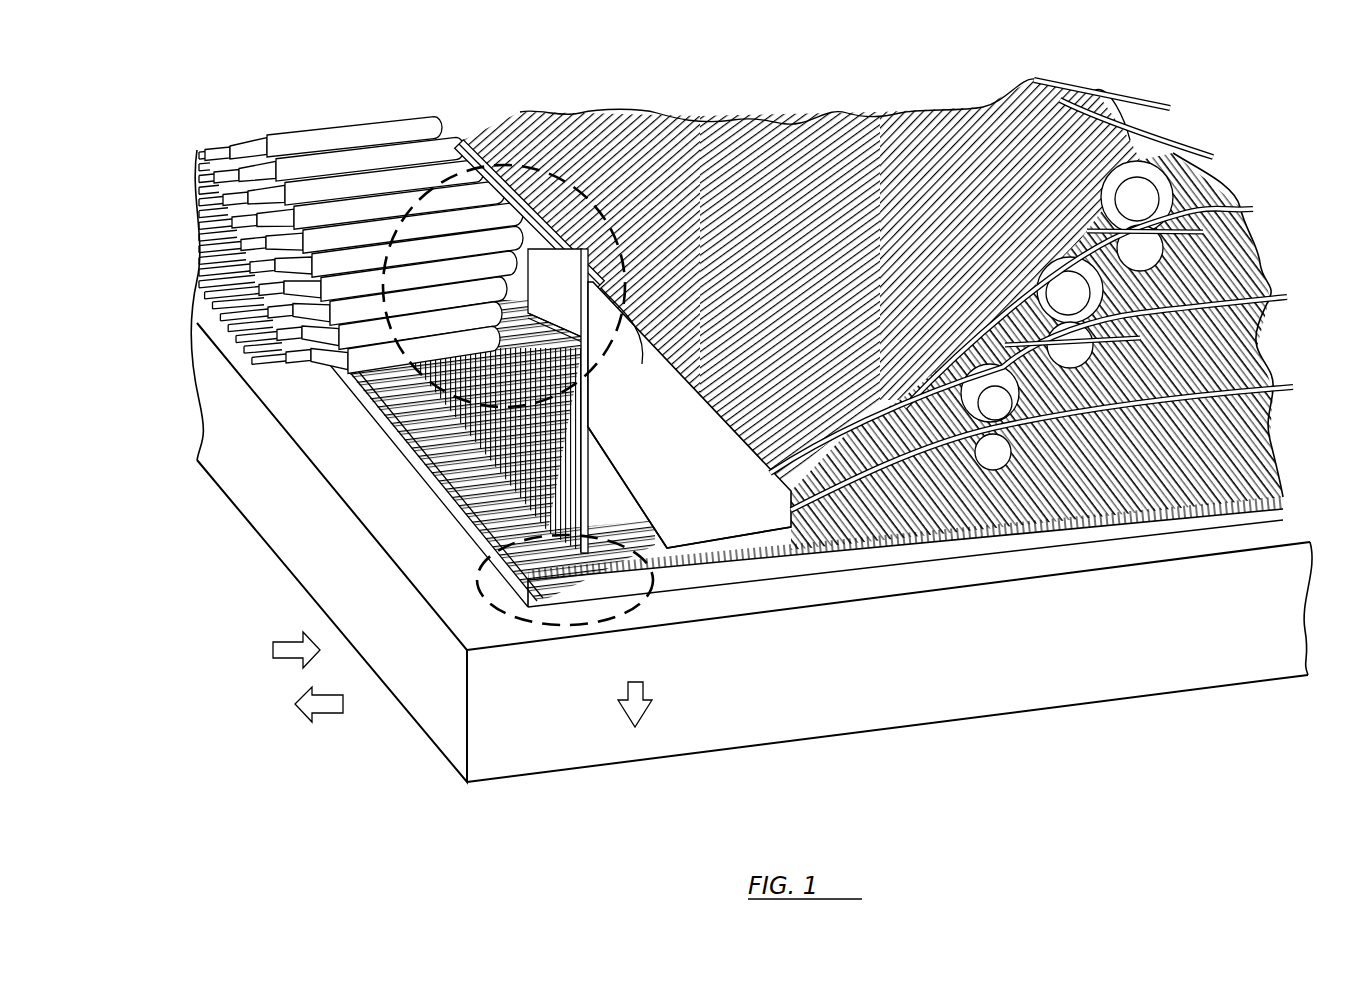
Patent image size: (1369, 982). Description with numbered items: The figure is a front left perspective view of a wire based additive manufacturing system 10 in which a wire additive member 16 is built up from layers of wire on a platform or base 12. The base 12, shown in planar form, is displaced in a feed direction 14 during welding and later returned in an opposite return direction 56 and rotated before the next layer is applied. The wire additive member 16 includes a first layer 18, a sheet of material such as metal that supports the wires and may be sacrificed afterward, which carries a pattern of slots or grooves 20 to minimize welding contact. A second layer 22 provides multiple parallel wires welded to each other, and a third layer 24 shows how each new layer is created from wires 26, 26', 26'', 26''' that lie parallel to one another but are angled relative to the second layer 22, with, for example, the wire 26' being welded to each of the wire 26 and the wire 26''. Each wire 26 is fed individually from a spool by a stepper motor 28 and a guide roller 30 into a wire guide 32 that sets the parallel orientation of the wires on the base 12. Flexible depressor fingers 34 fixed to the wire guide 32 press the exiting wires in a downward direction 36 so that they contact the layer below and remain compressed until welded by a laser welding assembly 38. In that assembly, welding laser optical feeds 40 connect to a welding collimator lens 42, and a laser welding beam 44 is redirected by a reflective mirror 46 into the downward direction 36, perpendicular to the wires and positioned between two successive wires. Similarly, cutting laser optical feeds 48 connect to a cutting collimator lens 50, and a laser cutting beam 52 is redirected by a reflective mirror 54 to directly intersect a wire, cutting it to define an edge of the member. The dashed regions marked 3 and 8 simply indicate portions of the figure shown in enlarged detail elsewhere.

The detail region of FIG. 3 is at (480, 597).
The detail region of FIG. 8 is at (490, 165).
The wire based additive manufacturing system 10 is at (1232, 84).
The base 12 is at (590, 728).
The feed direction 14 is at (336, 704).
The wire additive member 16 is at (1289, 493).
The first layer 18 is at (747, 577).
The slots or grooves 20 is at (463, 513).
The second layer 22 is at (567, 582).
The third layer 24 is at (537, 580).
The wire 26 is at (1062, 448).
The wire 26' is at (1053, 352).
The wire 26'' is at (1106, 281).
The wire 26''' is at (1123, 103).
The stepper motor 28 is at (1008, 415).
The guide roller 30 is at (1006, 464).
The wire guide 32 is at (713, 541).
The flexible depressor fingers 34 is at (655, 555).
The downward direction 36 is at (635, 689).
The laser welding assembly 38 is at (296, 132).
The welding laser optical feeds 40 is at (335, 363).
The welding collimator lens 42 is at (368, 353).
The laser welding beam 44 is at (450, 455).
The reflective mirror 46 is at (587, 416).
The cutting laser optical feeds 48 is at (212, 203).
The cutting collimator lens 50 is at (430, 262).
The laser cutting beam 52 is at (594, 433).
The reflective mirror 54 is at (642, 364).
The return direction 56 is at (281, 650).